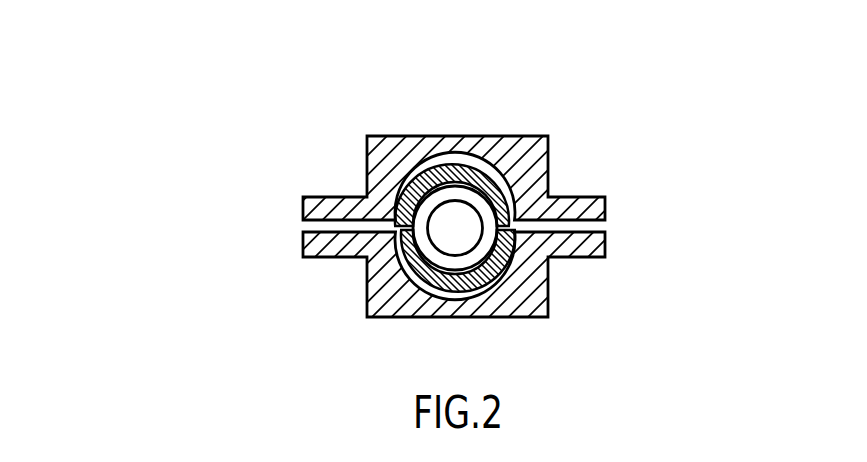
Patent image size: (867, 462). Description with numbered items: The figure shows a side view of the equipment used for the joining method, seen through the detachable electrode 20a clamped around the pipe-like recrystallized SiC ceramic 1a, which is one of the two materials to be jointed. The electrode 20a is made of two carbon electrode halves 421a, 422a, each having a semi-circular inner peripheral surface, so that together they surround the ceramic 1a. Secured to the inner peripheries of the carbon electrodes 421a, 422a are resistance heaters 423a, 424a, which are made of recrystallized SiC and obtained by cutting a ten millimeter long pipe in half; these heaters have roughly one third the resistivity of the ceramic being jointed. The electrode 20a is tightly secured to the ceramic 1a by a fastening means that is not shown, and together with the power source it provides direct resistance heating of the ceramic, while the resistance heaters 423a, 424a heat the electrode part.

The recrystallized SiC ceramic 1a is at (463, 195).
The electrode 20a is at (172, 128).
The carbon electrode 421a is at (517, 163).
The carbon electrode 422a is at (537, 298).
The resistance heater 423a is at (420, 182).
The resistance heater 424a is at (418, 274).